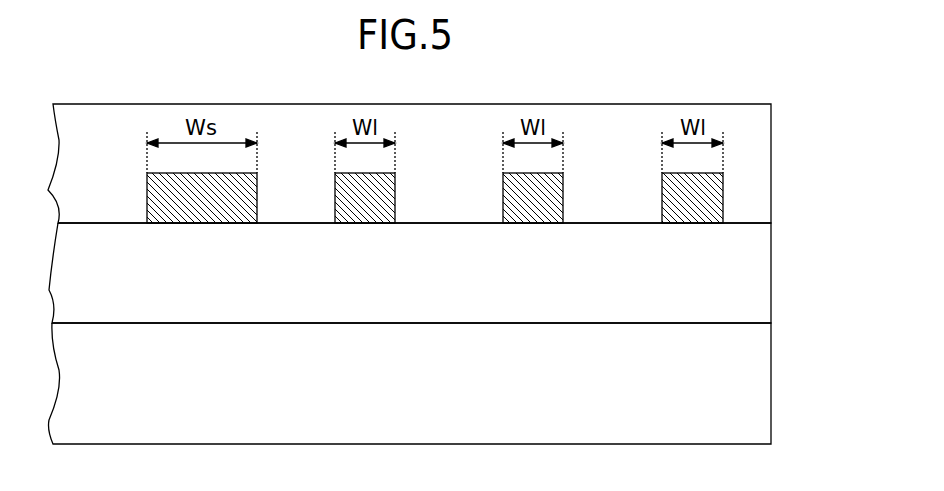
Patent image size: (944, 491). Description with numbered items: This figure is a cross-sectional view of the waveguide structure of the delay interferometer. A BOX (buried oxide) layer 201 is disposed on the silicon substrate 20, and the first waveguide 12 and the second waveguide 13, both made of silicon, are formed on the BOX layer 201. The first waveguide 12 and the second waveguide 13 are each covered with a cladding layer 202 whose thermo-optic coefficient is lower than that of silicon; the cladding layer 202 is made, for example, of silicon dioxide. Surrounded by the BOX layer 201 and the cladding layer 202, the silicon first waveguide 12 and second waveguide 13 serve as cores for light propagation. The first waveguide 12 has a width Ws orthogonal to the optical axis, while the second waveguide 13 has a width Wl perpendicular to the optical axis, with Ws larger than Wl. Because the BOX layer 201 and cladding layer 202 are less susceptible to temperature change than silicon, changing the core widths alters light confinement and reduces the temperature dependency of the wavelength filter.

The first waveguide 12 is at (145, 203).
The second waveguide 13 is at (333, 203).
The silicon substrate 20 is at (744, 383).
The BOX layer 201 is at (745, 273).
The cladding layer 202 is at (744, 163).